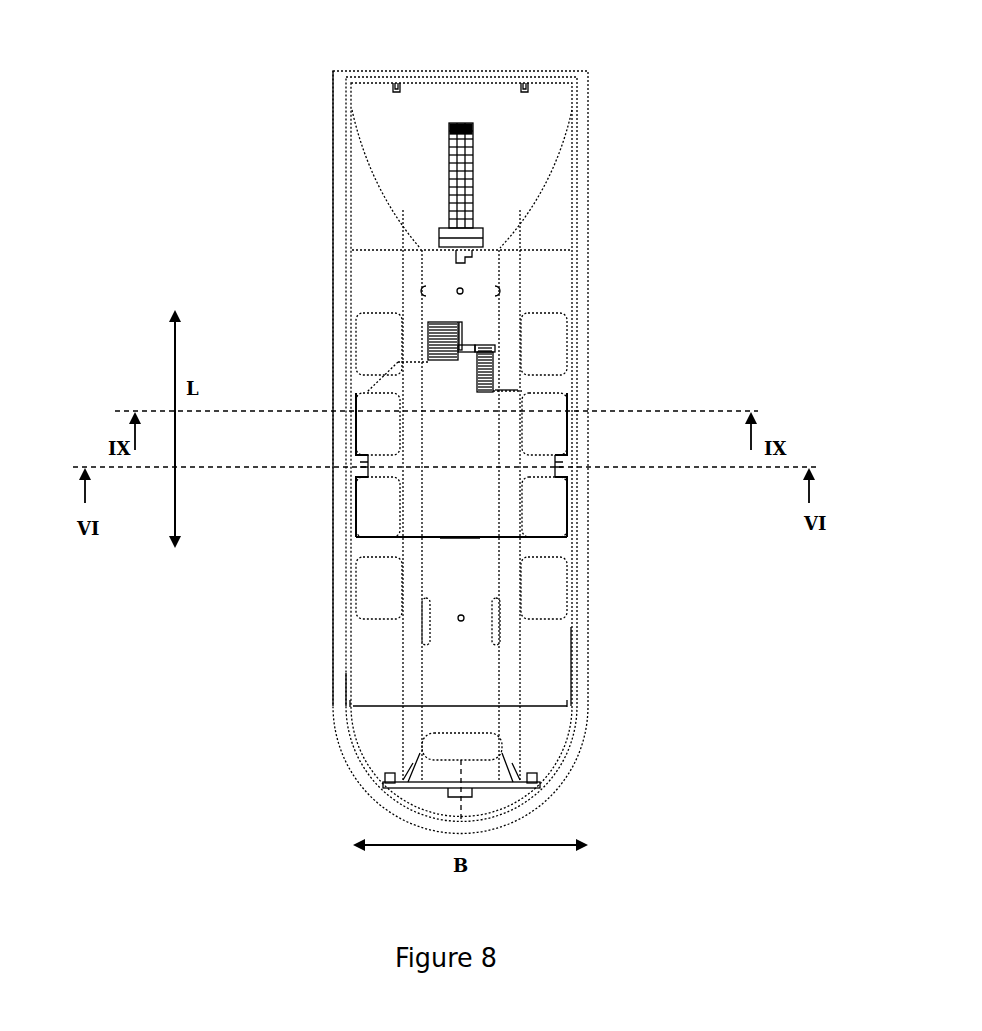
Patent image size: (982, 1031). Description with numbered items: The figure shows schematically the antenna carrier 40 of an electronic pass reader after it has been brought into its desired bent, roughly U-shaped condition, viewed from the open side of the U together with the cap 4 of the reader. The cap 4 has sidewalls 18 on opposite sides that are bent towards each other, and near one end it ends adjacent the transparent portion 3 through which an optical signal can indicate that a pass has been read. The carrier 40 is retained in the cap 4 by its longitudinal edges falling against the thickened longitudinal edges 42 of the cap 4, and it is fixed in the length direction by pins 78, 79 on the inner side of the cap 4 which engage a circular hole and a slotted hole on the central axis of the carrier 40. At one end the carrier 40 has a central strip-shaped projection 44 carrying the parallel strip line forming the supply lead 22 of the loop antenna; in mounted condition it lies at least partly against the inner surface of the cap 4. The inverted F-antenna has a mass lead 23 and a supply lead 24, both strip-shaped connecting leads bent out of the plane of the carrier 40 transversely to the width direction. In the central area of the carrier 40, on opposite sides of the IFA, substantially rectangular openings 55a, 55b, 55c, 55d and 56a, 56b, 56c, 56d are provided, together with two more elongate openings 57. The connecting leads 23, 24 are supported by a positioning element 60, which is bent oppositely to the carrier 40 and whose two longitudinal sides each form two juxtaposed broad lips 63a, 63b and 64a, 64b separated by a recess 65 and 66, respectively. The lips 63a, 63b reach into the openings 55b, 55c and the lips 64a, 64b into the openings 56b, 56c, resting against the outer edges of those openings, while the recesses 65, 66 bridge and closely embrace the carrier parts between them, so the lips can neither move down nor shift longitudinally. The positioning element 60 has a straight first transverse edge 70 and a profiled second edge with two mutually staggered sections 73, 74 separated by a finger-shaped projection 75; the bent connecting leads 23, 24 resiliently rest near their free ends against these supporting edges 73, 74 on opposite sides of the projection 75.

The transparent portion 3 is at (483, 775).
The cap 4 is at (533, 100).
The sidewalls 18 is at (438, 62).
The supply lead 22 is at (470, 168).
The mass lead 23 is at (442, 342).
The supply lead 24 is at (492, 347).
The carrier 40 is at (368, 648).
The thickened longitudinal edges 42 is at (340, 337).
The strip-shaped projection 44 is at (470, 188).
The rectangular opening 55a is at (379, 344).
The rectangular opening 55b is at (378, 424).
The rectangular opening 55c is at (378, 507).
The rectangular opening 55d is at (379, 588).
The rectangular opening 56a is at (544, 344).
The rectangular opening 56b is at (544, 424).
The rectangular opening 56c is at (544, 507).
The rectangular opening 56d is at (544, 588).
The elongate openings 57 is at (427, 638).
The positioning element 60 is at (483, 505).
The lip 63a is at (357, 420).
The lip 63b is at (357, 527).
The lip 64a is at (565, 425).
The lip 64b is at (565, 523).
The recess 65 is at (363, 465).
The recess 66 is at (560, 462).
The first transverse edge 70 is at (460, 538).
The section 73 is at (420, 360).
The section 74 is at (509, 389).
The finger-shaped projection 75 is at (468, 345).
The pin 78 is at (460, 291).
The pin 79 is at (458, 620).